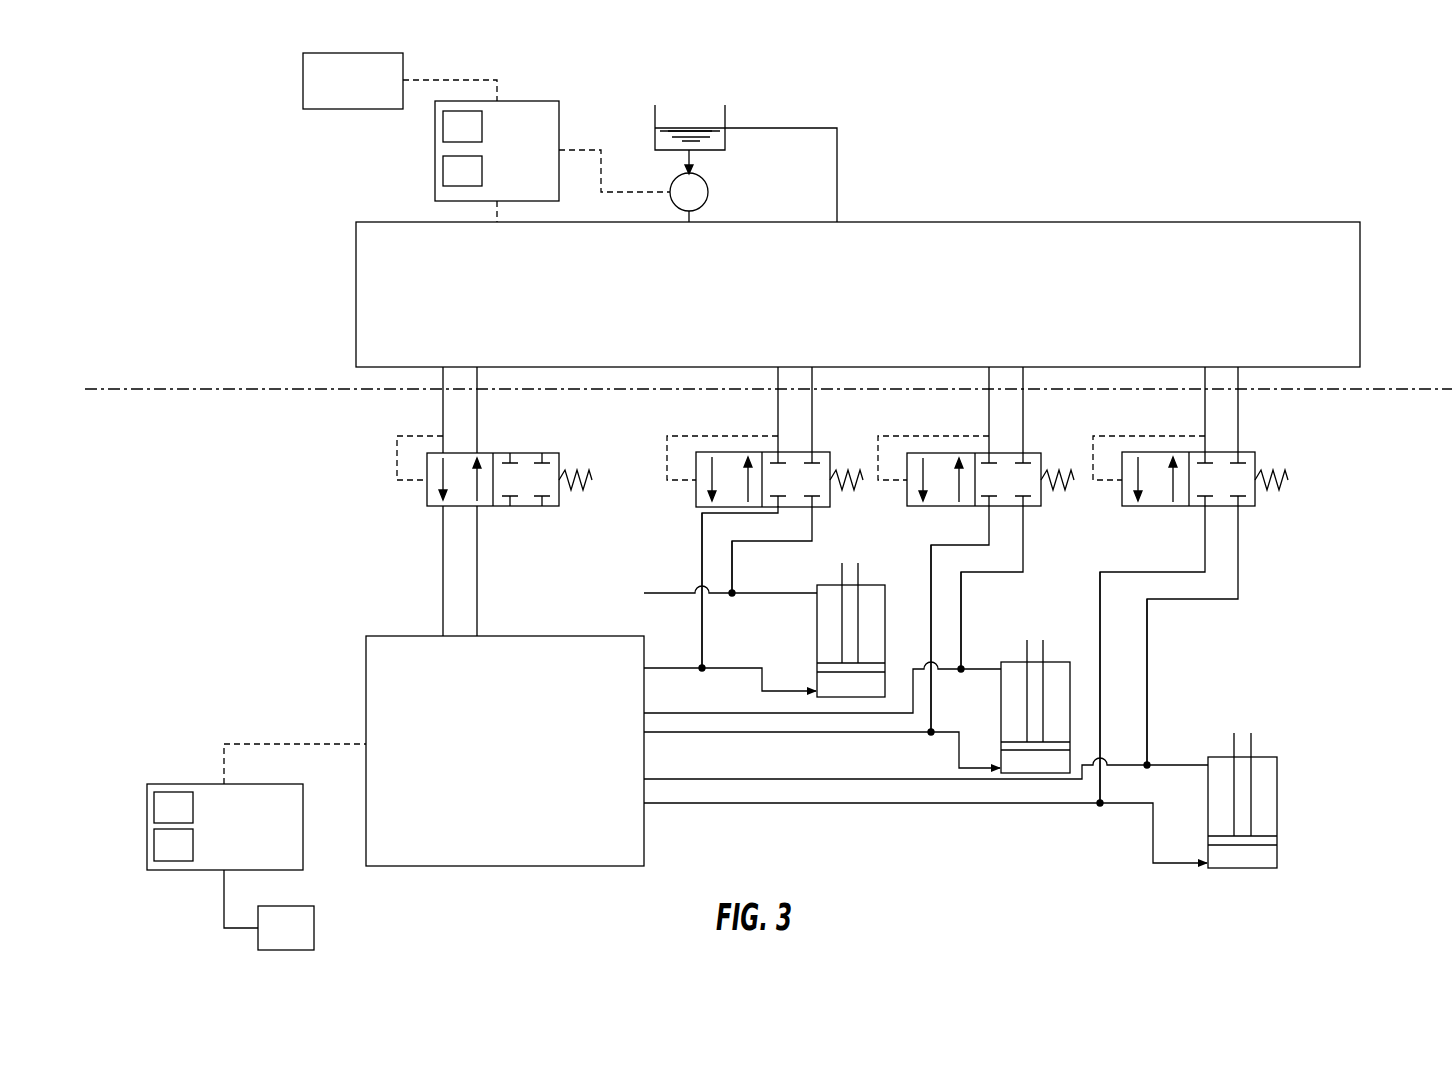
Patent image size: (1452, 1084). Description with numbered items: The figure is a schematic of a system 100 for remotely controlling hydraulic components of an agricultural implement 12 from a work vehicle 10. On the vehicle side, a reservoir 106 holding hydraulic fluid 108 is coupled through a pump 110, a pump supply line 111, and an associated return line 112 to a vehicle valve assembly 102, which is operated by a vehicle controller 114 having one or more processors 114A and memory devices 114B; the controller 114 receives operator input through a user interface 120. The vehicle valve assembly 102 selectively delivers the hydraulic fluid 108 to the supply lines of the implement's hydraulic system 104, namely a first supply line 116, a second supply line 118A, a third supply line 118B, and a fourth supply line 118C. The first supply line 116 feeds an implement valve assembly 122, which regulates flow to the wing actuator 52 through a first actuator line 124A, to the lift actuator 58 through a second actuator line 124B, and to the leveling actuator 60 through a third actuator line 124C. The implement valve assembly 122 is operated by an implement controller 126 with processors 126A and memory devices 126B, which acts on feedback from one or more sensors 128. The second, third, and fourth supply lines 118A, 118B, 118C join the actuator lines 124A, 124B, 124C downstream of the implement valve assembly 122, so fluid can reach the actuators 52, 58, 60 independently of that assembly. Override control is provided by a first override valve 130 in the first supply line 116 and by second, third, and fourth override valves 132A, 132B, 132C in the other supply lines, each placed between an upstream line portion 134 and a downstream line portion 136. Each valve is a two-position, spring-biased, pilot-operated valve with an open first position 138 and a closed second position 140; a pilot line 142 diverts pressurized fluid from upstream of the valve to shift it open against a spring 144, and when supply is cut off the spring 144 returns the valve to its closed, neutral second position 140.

The work vehicle 10 is at (193, 272).
The implement 12 is at (193, 520).
The wing actuator 52 is at (877, 610).
The lift actuator 58 is at (1058, 662).
The leveling actuator 60 is at (1262, 762).
The system 100 is at (1190, 138).
The vehicle valve assembly 102 is at (877, 309).
The hydraulic system 104 is at (1405, 510).
The reservoir 106 is at (728, 112).
The hydraulic fluid 108 is at (690, 140).
The pump 110 is at (708, 192).
The pump supply line 111 is at (692, 168).
The return line 112 is at (837, 170).
The vehicle controller 114 is at (543, 130).
The processor 114A is at (450, 120).
The memory device 114B is at (450, 172).
The first supply line 116 is at (424, 567).
The second supply line 118A is at (692, 547).
The third supply line 118B is at (1036, 577).
The fourth supply line 118C is at (1243, 575).
The user interface 120 is at (330, 87).
The implement valve assembly 122 is at (519, 759).
The first actuator line 124A is at (738, 668).
The second actuator line 124B is at (805, 733).
The third actuator line 124C is at (790, 805).
The implement controller 126 is at (288, 850).
The processor 126A is at (162, 807).
The memory device 126B is at (162, 845).
The sensor 128 is at (303, 925).
The first override valve 130 is at (527, 444).
The second override valve 132A is at (825, 438).
The third override valve 132B is at (1035, 446).
The fourth override valve 132C is at (1250, 444).
The upstream line portion 134 is at (443, 405).
The downstream line portion 136 is at (443, 593).
The first position 138 is at (427, 490).
The second position 140 is at (560, 495).
The pilot line 142 is at (397, 448).
The spring 144 is at (570, 478).